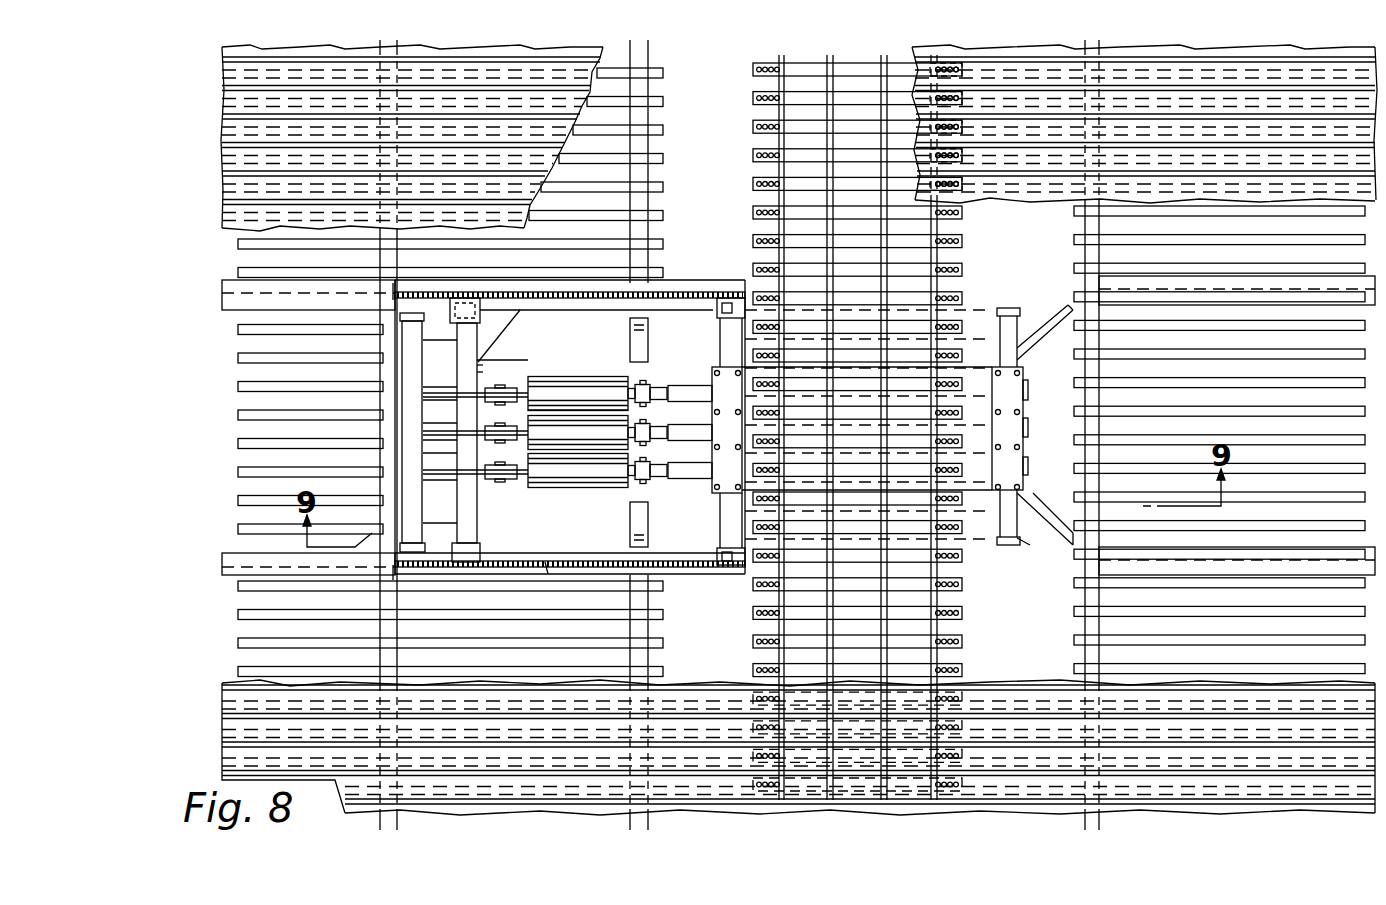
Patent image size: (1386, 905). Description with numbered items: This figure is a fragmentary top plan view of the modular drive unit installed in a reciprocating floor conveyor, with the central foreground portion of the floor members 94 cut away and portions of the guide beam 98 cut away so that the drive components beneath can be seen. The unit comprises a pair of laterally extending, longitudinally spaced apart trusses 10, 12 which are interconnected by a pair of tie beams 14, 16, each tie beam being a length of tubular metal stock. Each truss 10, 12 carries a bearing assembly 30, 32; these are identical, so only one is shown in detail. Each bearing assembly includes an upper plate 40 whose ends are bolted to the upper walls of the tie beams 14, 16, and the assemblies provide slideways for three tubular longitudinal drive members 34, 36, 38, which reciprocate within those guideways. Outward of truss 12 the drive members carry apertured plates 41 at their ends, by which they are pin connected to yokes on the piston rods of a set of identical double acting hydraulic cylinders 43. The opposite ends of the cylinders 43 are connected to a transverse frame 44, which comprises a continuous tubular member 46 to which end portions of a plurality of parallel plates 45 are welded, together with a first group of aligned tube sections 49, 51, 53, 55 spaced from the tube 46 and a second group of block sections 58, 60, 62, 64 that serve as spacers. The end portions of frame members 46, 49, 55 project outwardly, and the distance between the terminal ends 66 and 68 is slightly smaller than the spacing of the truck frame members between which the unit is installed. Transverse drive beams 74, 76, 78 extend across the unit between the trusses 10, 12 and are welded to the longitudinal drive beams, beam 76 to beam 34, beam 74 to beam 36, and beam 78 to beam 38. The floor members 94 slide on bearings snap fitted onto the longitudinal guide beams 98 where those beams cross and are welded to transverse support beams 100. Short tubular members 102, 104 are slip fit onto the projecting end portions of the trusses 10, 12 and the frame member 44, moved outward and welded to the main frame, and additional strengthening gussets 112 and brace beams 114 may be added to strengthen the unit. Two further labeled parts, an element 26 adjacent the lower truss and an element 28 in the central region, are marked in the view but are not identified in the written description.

The truss 10 is at (1046, 567).
The truss 12 is at (720, 594).
The tie beam 14 is at (973, 368).
The tie beam 16 is at (976, 489).
The lower chain 26 is at (720, 565).
The intermediate panel 28 is at (738, 290).
The bearing assembly 30 is at (1020, 548).
The bearing assembly 32 is at (712, 361).
The longitudinal drive member 34 is at (700, 480).
The longitudinal drive member 36 is at (683, 425).
The longitudinal drive member 38 is at (648, 380).
The upper plate 40 is at (740, 568).
The apertured plate 41 is at (645, 381).
The double acting hydraulic cylinder 43 is at (569, 377).
The transverse frame 44 is at (484, 548).
The parallel plate 45 is at (572, 488).
The continuous tubular member 46 is at (460, 566).
The tube section 49 is at (483, 366).
The tube section 51 is at (482, 372).
The tube section 53 is at (470, 472).
The tube section 55 is at (473, 506).
The spacer block section 58 is at (450, 373).
The spacer block section 60 is at (449, 422).
The spacer block section 62 is at (449, 460).
The spacer block section 64 is at (450, 507).
The terminal end 66 is at (481, 296).
The terminal end 68 is at (478, 566).
The transverse drive beam 74 is at (900, 137).
The transverse drive beam 76 is at (850, 107).
The transverse drive beam 78 is at (790, 82).
The floor member 94 is at (1057, 155).
The longitudinal guide beam 98 is at (666, 185).
The transverse support beam 100 is at (1090, 656).
The short tubular member 102 is at (716, 298).
The short tubular member 104 is at (468, 296).
The strengthening gusset 112 is at (396, 275).
The brace beam 114 is at (1047, 348).